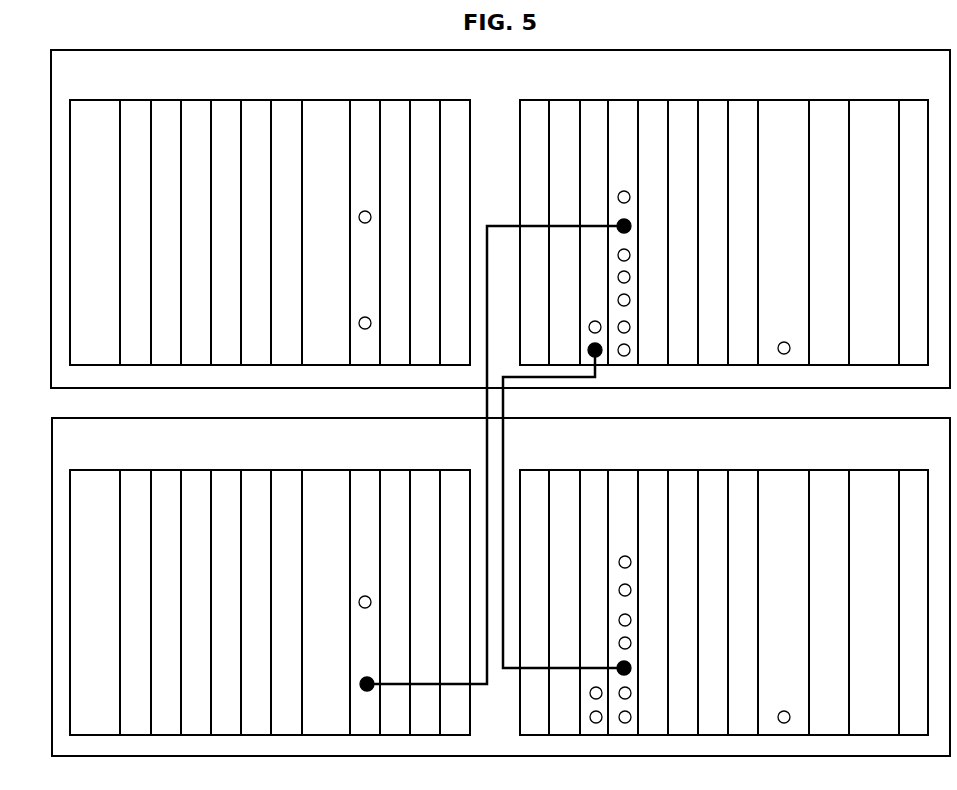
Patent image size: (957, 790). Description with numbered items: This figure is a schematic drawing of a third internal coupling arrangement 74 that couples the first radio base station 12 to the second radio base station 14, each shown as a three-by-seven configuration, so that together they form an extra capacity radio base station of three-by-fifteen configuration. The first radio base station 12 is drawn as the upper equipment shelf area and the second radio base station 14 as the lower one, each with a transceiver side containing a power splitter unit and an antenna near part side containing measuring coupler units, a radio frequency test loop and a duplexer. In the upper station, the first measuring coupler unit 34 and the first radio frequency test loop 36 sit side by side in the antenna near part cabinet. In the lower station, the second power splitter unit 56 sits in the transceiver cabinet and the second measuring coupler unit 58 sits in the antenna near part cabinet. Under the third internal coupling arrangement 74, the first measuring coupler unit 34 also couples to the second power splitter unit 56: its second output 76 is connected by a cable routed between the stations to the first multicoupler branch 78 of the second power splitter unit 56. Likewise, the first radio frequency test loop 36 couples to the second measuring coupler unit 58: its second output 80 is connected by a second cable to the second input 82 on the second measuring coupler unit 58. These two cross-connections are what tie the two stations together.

The first radio base station 12 is at (50, 88).
The second radio base station 14 is at (51, 443).
The third internal coupling arrangement 74 is at (411, 87).
The first radio frequency test loop 36 is at (595, 107).
The first measuring coupler unit 34 is at (624, 104).
The second output 76 is at (628, 231).
The second output 80 is at (600, 354).
The second power splitter unit 56 is at (367, 472).
The second measuring coupler unit 58 is at (626, 470).
The first multicoupler branch 78 is at (360, 687).
The second input 82 is at (630, 664).